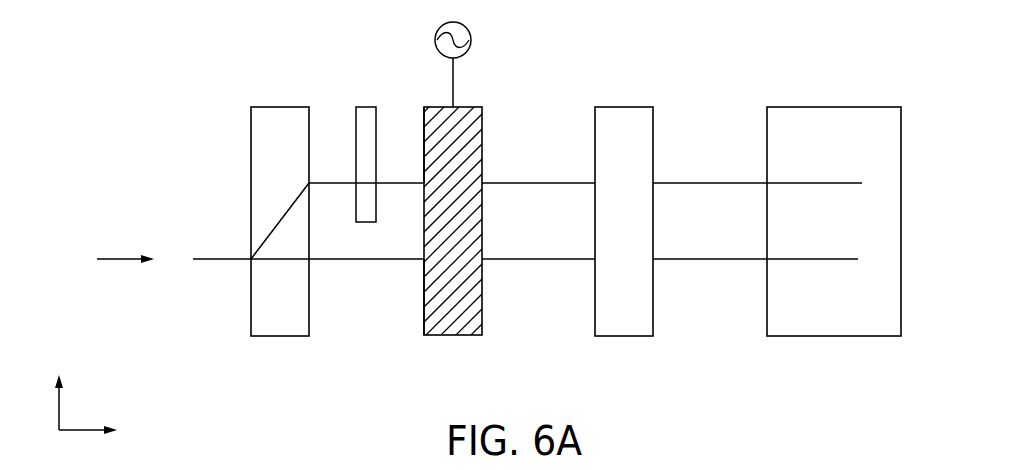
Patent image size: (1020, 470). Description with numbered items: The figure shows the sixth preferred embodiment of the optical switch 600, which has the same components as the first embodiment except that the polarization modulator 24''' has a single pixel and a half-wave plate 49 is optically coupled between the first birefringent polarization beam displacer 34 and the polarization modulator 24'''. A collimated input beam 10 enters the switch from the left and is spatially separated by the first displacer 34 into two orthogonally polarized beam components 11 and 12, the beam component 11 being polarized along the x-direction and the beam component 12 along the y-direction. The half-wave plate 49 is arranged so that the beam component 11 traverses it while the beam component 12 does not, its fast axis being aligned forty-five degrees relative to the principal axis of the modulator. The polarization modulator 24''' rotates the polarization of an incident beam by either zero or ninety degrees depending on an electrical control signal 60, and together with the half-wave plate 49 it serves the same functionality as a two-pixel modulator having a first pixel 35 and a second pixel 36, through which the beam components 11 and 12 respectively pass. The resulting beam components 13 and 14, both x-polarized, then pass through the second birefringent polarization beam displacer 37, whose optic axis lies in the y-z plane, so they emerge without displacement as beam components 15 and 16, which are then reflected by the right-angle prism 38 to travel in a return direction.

The optical switch 600 is at (222, 43).
The collimated input beam 10 is at (178, 260).
The beam component 11 is at (333, 183).
The beam component 12 is at (365, 262).
The beam component 13 is at (534, 183).
The beam component 14 is at (535, 262).
The beam component 15 is at (709, 183).
The beam component 16 is at (708, 262).
The polarization modulator 24''' is at (403, 235).
The first birefringent polarization beam displacer 34 is at (285, 106).
The first pixel 35 is at (424, 128).
The second pixel 36 is at (455, 298).
The second birefringent polarization beam displacer 37 is at (630, 107).
The right-angle prism 38 is at (840, 107).
The half-wave plate 49 is at (363, 107).
The electrical control signal 60 is at (470, 27).